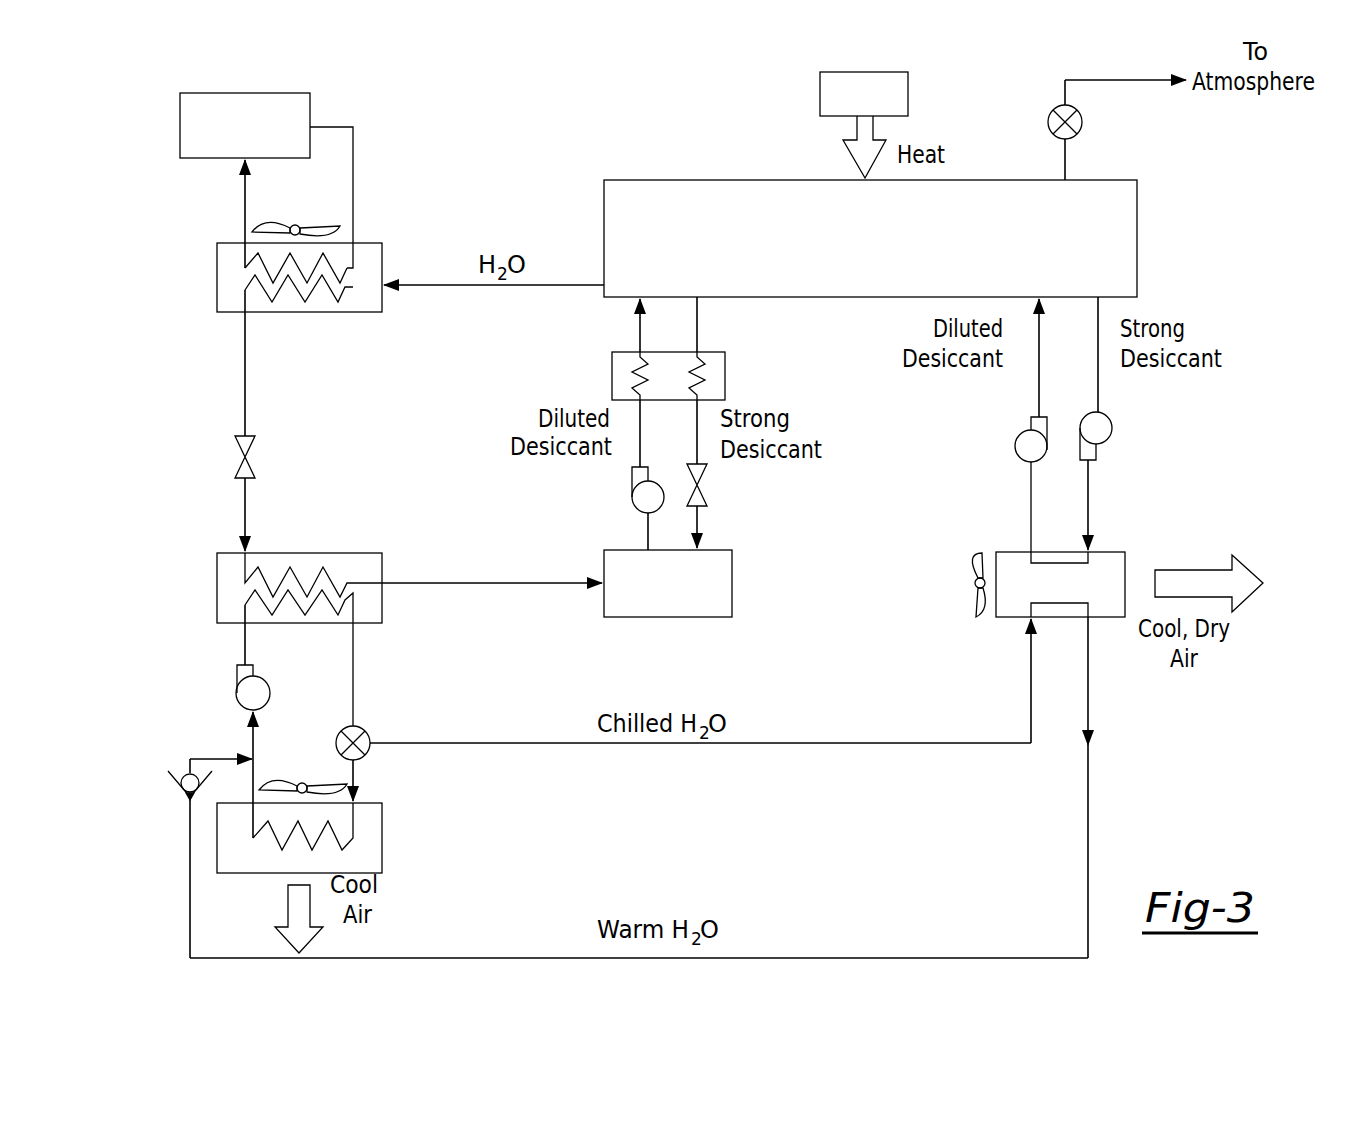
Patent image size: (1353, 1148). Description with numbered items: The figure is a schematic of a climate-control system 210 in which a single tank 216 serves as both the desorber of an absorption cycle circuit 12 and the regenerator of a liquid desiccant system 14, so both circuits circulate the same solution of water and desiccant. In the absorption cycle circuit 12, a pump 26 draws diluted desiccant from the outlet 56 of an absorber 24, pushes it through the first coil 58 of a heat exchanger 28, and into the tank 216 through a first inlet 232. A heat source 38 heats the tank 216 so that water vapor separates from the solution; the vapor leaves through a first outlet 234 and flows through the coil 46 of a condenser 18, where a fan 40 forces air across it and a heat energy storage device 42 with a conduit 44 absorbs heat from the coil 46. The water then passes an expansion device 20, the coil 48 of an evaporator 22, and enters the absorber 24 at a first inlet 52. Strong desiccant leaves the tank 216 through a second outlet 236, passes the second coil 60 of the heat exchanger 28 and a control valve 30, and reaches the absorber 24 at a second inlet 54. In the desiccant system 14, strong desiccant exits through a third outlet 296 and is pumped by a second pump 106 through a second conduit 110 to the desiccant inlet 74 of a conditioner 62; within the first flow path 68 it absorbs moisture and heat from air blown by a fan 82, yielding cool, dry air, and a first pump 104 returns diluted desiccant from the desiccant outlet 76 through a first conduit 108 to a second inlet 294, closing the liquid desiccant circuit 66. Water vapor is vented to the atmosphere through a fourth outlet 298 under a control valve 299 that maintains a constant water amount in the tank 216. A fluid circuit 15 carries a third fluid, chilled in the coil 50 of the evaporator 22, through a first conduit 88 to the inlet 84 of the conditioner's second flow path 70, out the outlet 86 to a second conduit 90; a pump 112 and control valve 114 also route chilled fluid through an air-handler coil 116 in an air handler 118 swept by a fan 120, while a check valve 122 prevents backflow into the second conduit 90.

The absorption cycle circuit 12 is at (557, 595).
The desiccant system 14 is at (940, 487).
The fluid circuit 15 is at (548, 700).
The condenser 18 is at (217, 258).
The expansion device 20 is at (237, 445).
The evaporator 22 is at (217, 562).
The absorber 24 is at (732, 583).
The pump 26 is at (632, 498).
The heat exchanger 28 is at (612, 357).
The control valve 30 is at (707, 490).
The heat source 38 is at (908, 82).
The fan 40 is at (300, 226).
The heat energy storage device 42 is at (312, 103).
The conduit 44 is at (355, 255).
The coil 46 is at (340, 290).
The coil 48 is at (323, 567).
The coil 50 is at (330, 612).
The first inlet 52 is at (600, 578).
The second inlet 54 is at (697, 548).
The outlet 56 is at (640, 550).
The first coil 58 is at (632, 372).
The second coil 60 is at (705, 380).
The conditioner 62 is at (1128, 560).
The liquid desiccant circuit 66 is at (1008, 482).
The first flow path 68 is at (1048, 563).
The second flow path 70 is at (1050, 603).
The desiccant inlet 74 is at (1092, 548).
The desiccant outlet 76 is at (1033, 560).
The fan 82 is at (972, 605).
The inlet 84 is at (1028, 618).
The outlet 86 is at (1093, 617).
The first conduit 88 is at (807, 745).
The second conduit 90 is at (815, 958).
The first pump 104 is at (1016, 455).
The second pump 106 is at (1112, 440).
The first conduit 108 is at (1039, 395).
The second conduit 110 is at (1100, 407).
The pump 112 is at (237, 693).
The control valve 114 is at (365, 730).
The air-handler coil 116 is at (268, 838).
The air handler 118 is at (382, 848).
The fan 120 is at (305, 785).
The check valve 122 is at (182, 772).
The climate-control system 210 is at (568, 127).
The tank 216 is at (720, 178).
The first inlet 232 is at (636, 297).
The first outlet 234 is at (604, 285).
The second outlet 236 is at (697, 297).
The second inlet 294 is at (1039, 297).
The third outlet 296 is at (1100, 308).
The fourth outlet 298 is at (1065, 178).
The control valve 299 is at (1083, 125).